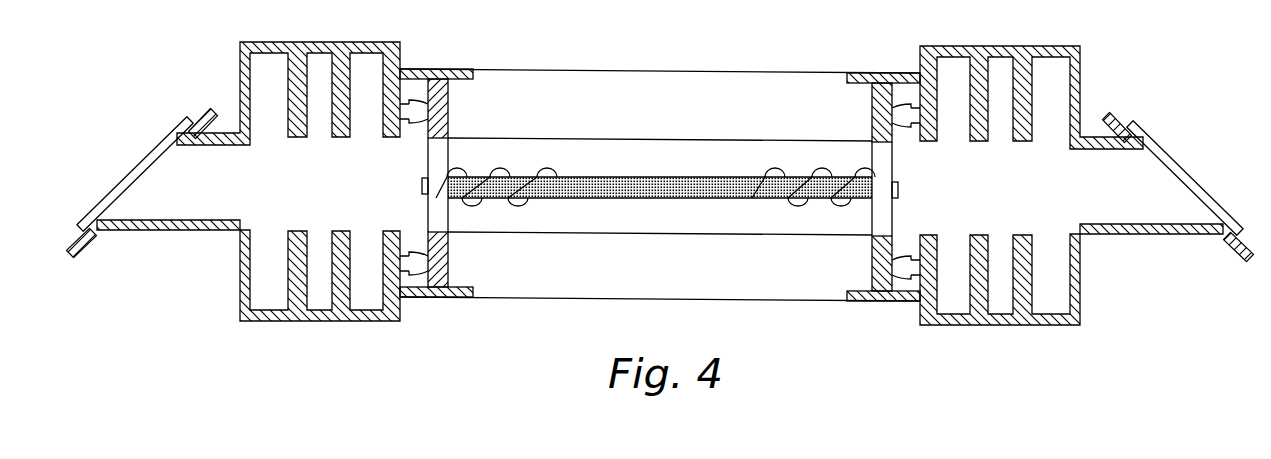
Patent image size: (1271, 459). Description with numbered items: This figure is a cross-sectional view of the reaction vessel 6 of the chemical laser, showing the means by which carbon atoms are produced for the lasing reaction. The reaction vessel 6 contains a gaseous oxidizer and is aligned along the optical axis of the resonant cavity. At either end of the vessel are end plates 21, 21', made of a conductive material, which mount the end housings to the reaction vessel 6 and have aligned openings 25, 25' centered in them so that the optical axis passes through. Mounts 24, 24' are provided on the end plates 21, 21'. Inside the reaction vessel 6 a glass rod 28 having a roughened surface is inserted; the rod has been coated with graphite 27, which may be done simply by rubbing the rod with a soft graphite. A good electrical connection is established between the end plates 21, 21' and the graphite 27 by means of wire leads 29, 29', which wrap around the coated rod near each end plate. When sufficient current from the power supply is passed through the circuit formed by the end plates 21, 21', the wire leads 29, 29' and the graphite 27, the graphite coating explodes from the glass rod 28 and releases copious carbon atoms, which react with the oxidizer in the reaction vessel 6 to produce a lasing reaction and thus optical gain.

The reaction vessel 6 is at (683, 137).
The end plate 21 is at (465, 183).
The end plate 21' is at (846, 187).
The mount 24 is at (375, 169).
The mount 24' is at (944, 178).
The opening 25 is at (385, 185).
The opening 25' is at (931, 189).
The graphite 27 is at (592, 200).
The glass rod 28 is at (733, 200).
The wire lead 29 is at (509, 147).
The wire lead 29' is at (789, 174).